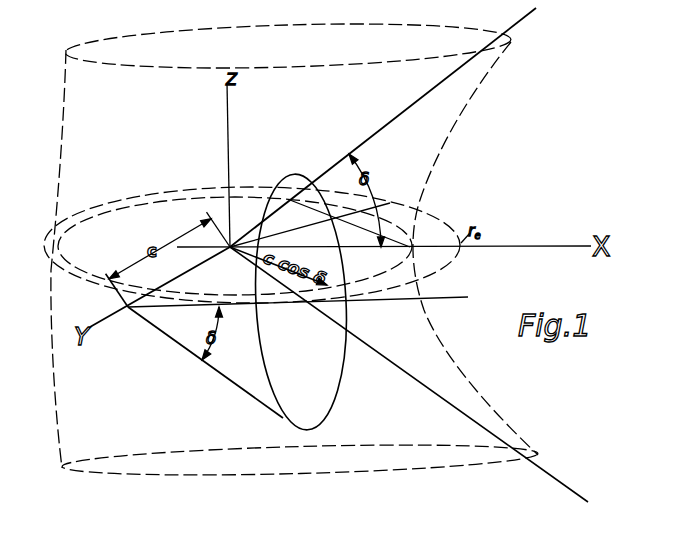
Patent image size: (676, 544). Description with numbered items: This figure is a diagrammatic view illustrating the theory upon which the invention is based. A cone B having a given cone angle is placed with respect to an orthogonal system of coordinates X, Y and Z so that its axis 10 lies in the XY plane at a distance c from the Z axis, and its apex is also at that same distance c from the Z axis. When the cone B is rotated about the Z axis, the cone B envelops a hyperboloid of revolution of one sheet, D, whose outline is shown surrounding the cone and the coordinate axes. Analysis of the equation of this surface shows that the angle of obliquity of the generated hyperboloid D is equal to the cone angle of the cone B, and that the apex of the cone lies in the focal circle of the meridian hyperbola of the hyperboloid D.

The axis 10 is at (432, 296).
The cone B is at (338, 387).
The hyperboloid of revolution of one sheet D is at (461, 110).